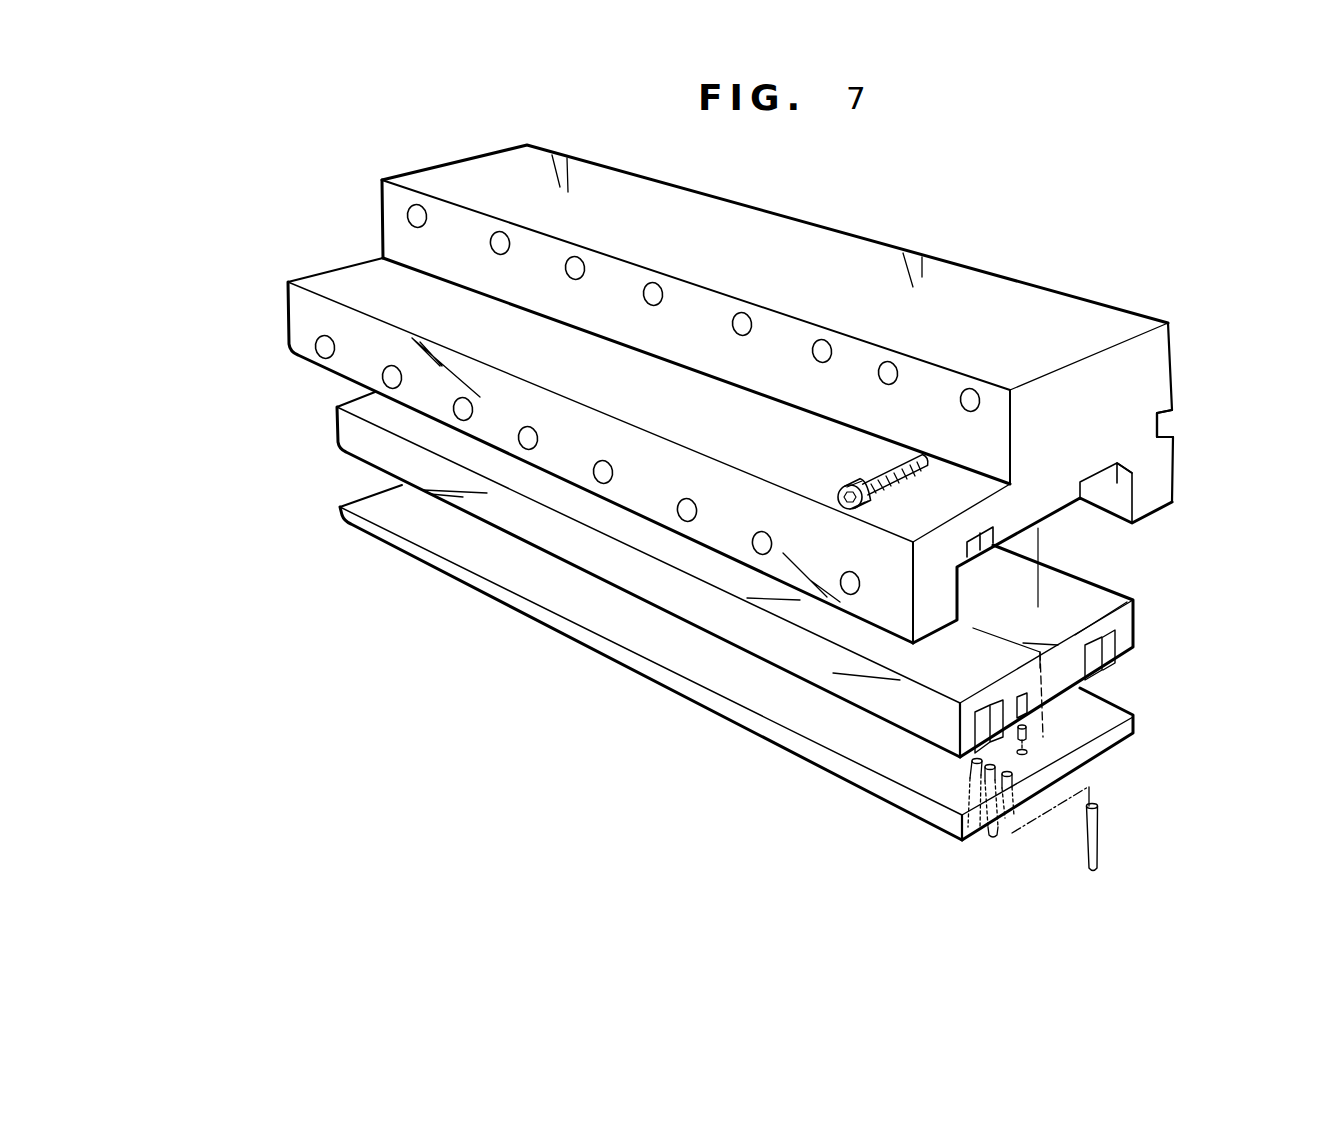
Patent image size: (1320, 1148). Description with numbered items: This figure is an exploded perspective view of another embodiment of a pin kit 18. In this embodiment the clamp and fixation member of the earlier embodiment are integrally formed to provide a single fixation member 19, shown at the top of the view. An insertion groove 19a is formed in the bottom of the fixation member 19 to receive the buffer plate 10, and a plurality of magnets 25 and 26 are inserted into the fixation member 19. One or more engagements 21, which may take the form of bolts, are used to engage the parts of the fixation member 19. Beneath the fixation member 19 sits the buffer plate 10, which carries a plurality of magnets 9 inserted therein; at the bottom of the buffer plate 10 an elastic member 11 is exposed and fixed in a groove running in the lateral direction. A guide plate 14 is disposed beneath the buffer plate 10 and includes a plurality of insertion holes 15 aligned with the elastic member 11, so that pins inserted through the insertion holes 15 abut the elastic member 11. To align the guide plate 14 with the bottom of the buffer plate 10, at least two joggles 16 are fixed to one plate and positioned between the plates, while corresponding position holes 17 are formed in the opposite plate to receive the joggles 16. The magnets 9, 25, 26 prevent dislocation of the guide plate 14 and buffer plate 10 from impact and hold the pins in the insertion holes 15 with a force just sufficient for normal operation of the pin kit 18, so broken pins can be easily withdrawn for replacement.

The magnets 9 is at (1133, 637).
The buffer plate 10 is at (796, 655).
The elastic member 11 is at (975, 765).
The guide plate 14 is at (838, 775).
The insertion holes 15 is at (1010, 777).
The joggles 16 is at (1030, 725).
The position holes 17 is at (1027, 752).
The pin kit 18 is at (603, 670).
The fixation member 19 is at (573, 457).
The insertion groove 19a is at (1065, 507).
The engagements 21 is at (843, 507).
The magnets 25 is at (1108, 468).
The magnets 26 is at (993, 532).